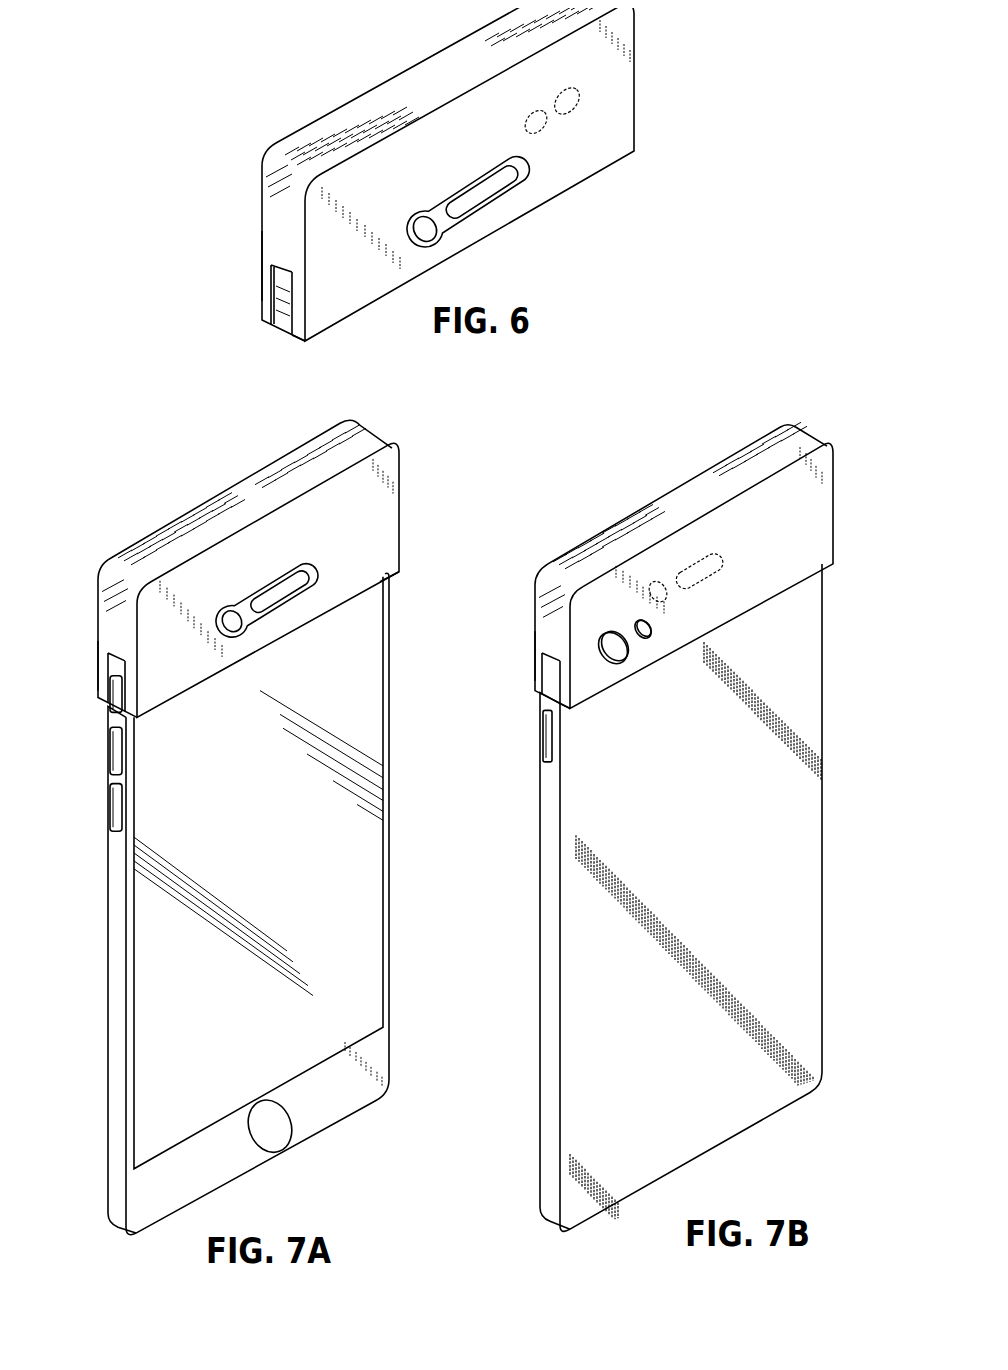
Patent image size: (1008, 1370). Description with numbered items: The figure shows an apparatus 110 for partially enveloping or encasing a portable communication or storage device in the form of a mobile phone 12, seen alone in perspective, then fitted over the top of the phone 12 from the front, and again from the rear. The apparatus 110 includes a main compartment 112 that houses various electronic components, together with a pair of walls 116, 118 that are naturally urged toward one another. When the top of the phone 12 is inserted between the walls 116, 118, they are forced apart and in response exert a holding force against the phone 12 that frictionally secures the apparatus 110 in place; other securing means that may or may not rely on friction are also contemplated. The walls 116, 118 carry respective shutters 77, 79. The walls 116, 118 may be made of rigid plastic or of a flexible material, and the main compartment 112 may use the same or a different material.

In FIG. 7A, the mobile phone 12 is at (393, 735).
In FIG. 7B, the mobile phone 12 is at (827, 733).
In FIG. 6, the shutter 77 is at (470, 180).
In FIG. 7A, the shutter 77 is at (267, 583).
In FIG. 7B, the shutter 77 is at (724, 548).
In FIG. 6, the shutter 79 is at (539, 111).
In FIG. 7B, the shutter 79 is at (620, 635).
In FIG. 6, the apparatus 110 is at (657, 71).
In FIG. 7A, the apparatus 110 is at (409, 495).
In FIG. 7B, the apparatus 110 is at (818, 422).
In FIG. 6, the main compartment 112 is at (281, 208).
In FIG. 7A, the main compartment 112 is at (115, 603).
In FIG. 7B, the main compartment 112 is at (552, 625).
In FIG. 6, the wall 116 is at (306, 325).
In FIG. 7A, the wall 116 is at (388, 557).
In FIG. 7B, the wall 116 is at (540, 683).
In FIG. 6, the wall 118 is at (265, 297).
In FIG. 7A, the wall 118 is at (98, 676).
In FIG. 7B, the wall 118 is at (565, 690).